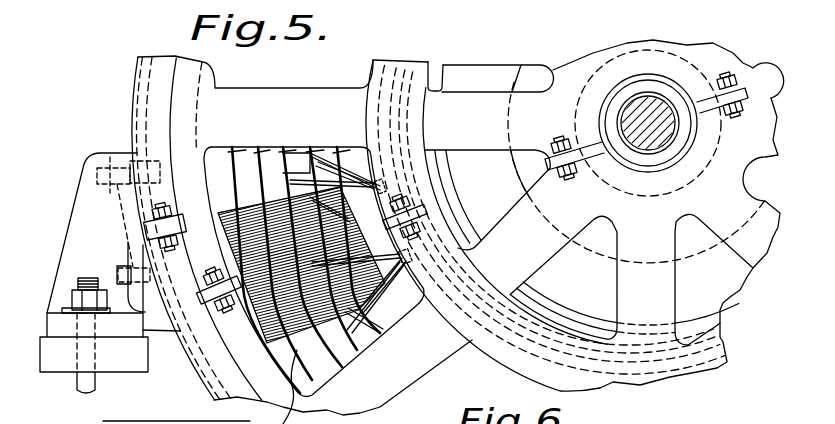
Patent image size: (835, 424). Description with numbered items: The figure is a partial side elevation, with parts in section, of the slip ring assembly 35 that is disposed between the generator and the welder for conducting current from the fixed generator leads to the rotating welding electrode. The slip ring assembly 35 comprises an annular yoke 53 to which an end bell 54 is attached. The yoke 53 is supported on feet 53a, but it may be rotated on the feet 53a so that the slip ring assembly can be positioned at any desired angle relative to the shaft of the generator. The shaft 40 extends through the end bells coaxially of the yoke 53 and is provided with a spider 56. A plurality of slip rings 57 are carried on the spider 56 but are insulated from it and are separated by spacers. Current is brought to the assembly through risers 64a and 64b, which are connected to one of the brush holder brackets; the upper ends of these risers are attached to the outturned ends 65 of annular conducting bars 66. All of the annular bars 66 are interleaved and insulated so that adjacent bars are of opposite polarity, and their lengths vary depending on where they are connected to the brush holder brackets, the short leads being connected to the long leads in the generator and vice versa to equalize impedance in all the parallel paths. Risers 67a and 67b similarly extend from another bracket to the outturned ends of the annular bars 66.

The annular yoke 53 is at (137, 109).
The feet 53a is at (84, 222).
The end bell 54 is at (414, 58).
The slip ring assembly 35 is at (488, 56).
The shaft 40 is at (650, 142).
The spider 56 is at (692, 250).
The slip rings 57 is at (717, 298).
The annular conducting bars 66 is at (232, 172).
The outturned ends 65 is at (290, 165).
The riser 64a is at (321, 157).
The riser 67a is at (323, 176).
The riser 64b is at (361, 231).
The riser 67b is at (336, 226).